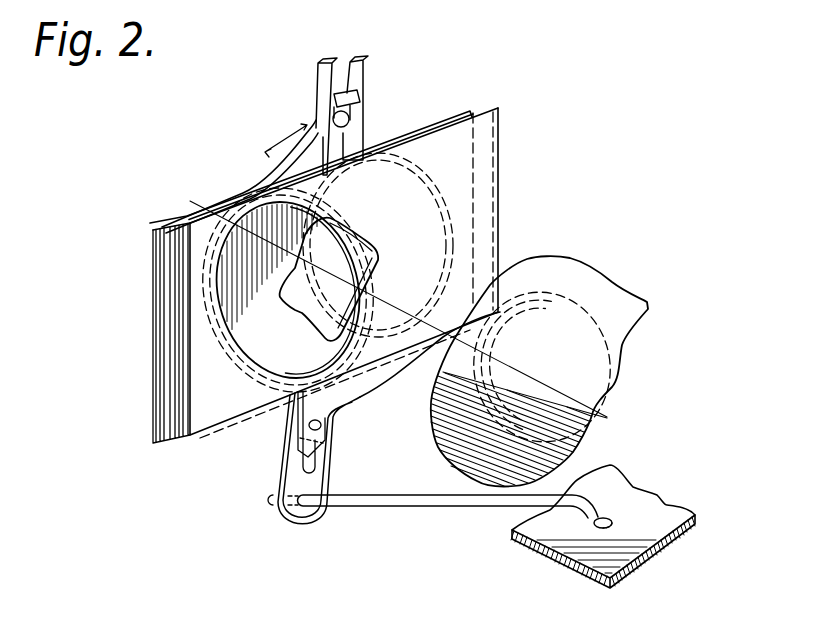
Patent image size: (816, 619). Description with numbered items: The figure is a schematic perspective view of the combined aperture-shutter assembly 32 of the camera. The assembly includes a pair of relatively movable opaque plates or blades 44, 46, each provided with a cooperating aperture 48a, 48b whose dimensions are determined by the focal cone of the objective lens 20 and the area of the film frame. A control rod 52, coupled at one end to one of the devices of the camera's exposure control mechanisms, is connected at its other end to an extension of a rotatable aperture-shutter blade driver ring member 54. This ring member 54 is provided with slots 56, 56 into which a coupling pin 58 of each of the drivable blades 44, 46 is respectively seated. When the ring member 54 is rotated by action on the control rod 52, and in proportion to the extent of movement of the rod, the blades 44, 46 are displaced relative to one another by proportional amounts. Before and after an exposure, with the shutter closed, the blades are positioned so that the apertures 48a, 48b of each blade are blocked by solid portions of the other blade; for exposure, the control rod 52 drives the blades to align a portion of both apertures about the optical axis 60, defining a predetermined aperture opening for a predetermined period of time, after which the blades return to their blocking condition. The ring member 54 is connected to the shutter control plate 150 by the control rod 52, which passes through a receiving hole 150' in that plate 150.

The objective lens 20 is at (611, 284).
The aperture-shutter assembly 32 is at (513, 183).
The opaque plate or blade 44 is at (165, 260).
The opaque plate or blade 46 is at (490, 140).
The aperture 48a is at (267, 220).
The aperture 48b is at (380, 168).
The control rod 52 is at (367, 493).
The aperture-shutter blade driver ring member 54 is at (380, 382).
The slot 56 is at (345, 62).
The coupling pin 58 is at (332, 113).
The optical axis 60 is at (352, 230).
The shutter control plate 150 is at (607, 513).
The receiving hole 150' is at (660, 499).